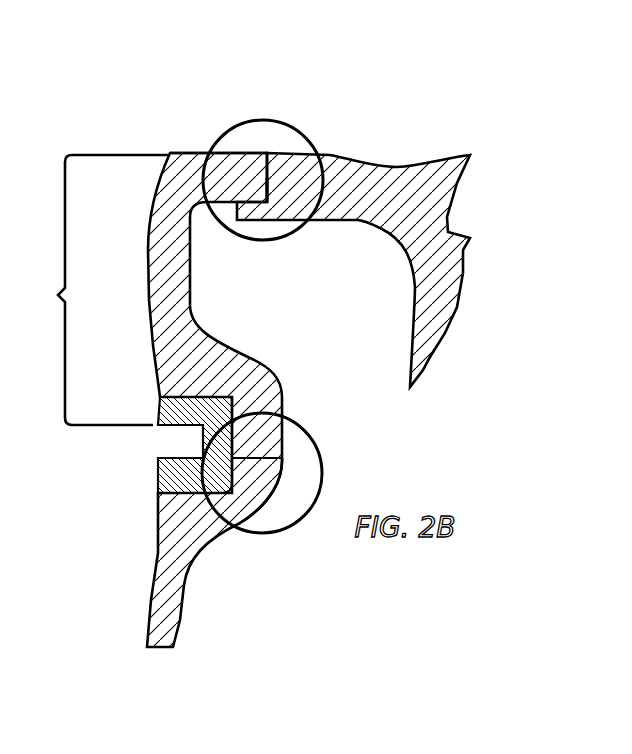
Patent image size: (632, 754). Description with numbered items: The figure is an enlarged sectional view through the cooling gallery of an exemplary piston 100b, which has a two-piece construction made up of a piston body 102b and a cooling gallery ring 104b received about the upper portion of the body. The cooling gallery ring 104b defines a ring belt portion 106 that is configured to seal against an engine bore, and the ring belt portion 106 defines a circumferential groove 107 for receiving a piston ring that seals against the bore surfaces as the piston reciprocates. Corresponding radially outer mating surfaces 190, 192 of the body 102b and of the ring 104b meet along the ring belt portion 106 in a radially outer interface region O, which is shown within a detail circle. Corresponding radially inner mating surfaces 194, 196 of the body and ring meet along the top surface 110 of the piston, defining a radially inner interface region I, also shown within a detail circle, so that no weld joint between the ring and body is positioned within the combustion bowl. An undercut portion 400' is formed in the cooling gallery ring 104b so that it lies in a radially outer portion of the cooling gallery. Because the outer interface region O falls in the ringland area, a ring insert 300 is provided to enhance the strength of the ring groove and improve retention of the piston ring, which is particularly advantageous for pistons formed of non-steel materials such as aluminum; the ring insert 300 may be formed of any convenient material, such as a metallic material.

The piston 100b is at (341, 68).
The piston body 102b is at (173, 573).
The cooling gallery ring 104b is at (192, 176).
The ring belt portion 106 is at (91, 290).
The circumferential groove 107 is at (126, 411).
The top surface 110 is at (358, 155).
The radially outer mating surface 190 is at (249, 462).
The radially outer mating surface 192 is at (266, 443).
The radially inner mating surface 194 is at (267, 178).
The radially inner mating surface 196 is at (262, 192).
The ring insert 300 is at (190, 412).
The undercut portion 400' is at (248, 273).
The radially inner interface region I is at (263, 120).
The radially outer interface region O is at (322, 473).